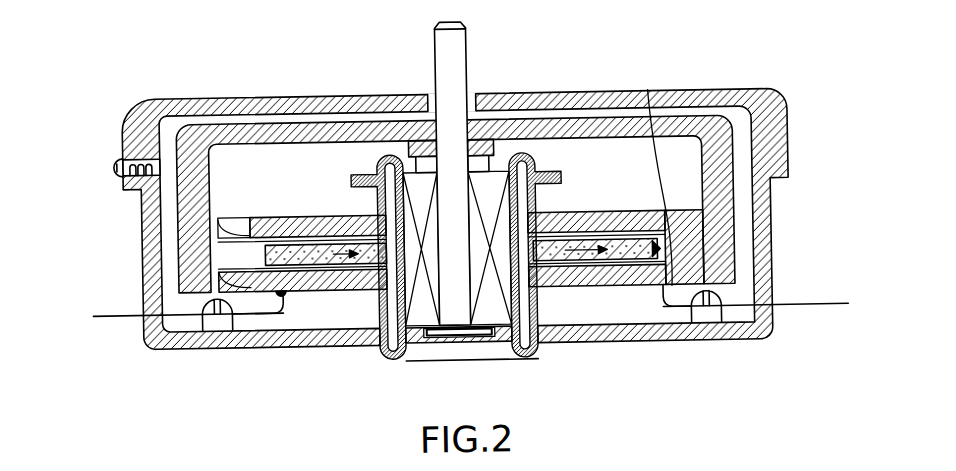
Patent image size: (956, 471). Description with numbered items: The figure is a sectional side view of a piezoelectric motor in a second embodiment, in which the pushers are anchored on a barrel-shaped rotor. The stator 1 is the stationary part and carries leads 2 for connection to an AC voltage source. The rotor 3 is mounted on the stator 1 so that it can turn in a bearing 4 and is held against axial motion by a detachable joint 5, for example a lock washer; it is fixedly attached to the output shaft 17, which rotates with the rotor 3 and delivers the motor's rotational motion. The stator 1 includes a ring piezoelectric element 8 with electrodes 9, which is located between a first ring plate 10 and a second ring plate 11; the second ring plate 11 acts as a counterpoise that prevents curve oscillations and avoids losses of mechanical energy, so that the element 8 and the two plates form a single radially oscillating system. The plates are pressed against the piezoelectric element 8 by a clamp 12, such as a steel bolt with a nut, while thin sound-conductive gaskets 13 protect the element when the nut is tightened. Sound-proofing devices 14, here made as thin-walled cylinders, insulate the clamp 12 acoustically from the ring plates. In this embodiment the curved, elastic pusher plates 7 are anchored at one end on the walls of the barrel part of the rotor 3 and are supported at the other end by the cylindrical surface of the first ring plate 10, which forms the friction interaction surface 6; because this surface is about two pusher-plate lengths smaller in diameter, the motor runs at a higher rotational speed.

The stator 1 is at (465, 225).
The leads 2 is at (111, 310).
The rotor 3 is at (714, 132).
The bearing 4 is at (416, 342).
The detachable joint 5 is at (478, 336).
The friction interaction surface 6 is at (232, 216).
The pusher plates 7 is at (690, 226).
The ring piezoelectric element 8 is at (318, 248).
The electrodes 9 is at (542, 259).
The first ring plate 10 is at (288, 227).
The second ring plate 11 is at (312, 281).
The clamp 12 is at (530, 358).
The gaskets 13 is at (350, 231).
The sound-proofing devices 14 is at (351, 183).
The output shaft 17 is at (456, 72).